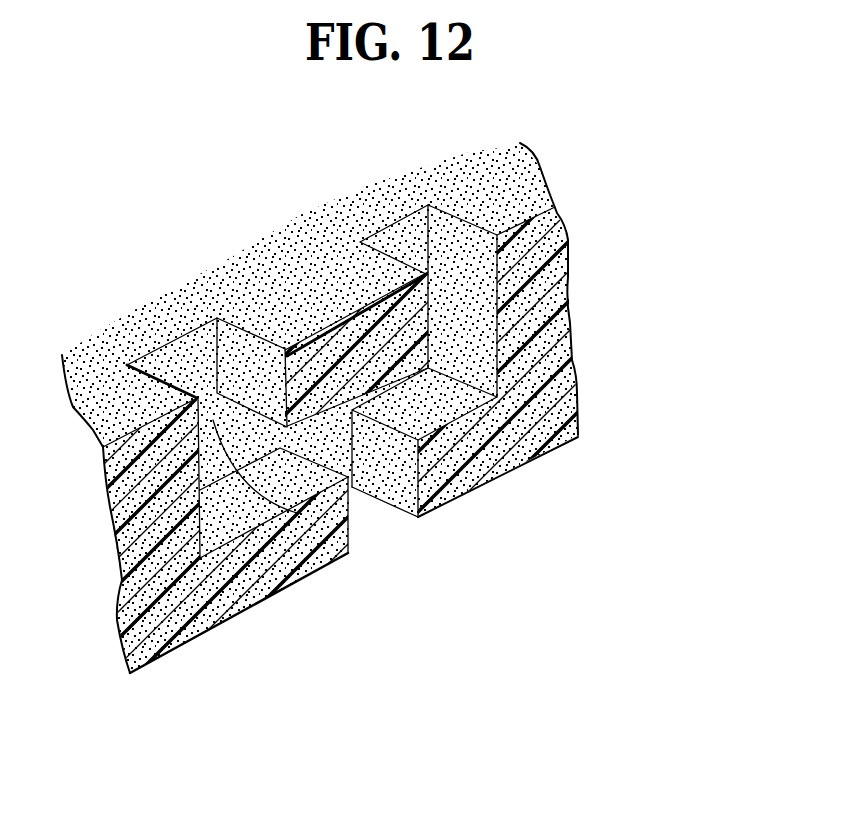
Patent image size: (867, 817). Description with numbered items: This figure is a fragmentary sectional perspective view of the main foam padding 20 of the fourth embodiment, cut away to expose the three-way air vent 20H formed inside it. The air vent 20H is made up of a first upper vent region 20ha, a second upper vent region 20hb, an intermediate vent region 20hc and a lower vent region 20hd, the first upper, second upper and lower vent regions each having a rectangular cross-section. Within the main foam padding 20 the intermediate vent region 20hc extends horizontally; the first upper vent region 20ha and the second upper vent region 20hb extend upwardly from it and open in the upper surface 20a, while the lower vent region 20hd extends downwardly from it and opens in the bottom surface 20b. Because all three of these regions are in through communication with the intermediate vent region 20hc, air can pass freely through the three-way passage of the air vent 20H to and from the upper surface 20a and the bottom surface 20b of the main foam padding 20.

The main foam padding 20 is at (530, 179).
The upper surface 20a is at (252, 260).
The bottom surface 20b is at (230, 618).
The three-way air vent 20H is at (655, 450).
The first upper vent region 20ha is at (347, 557).
The second upper vent region 20hb is at (423, 415).
The intermediate vent region 20hc is at (503, 468).
The lower vent region 20hd is at (373, 517).